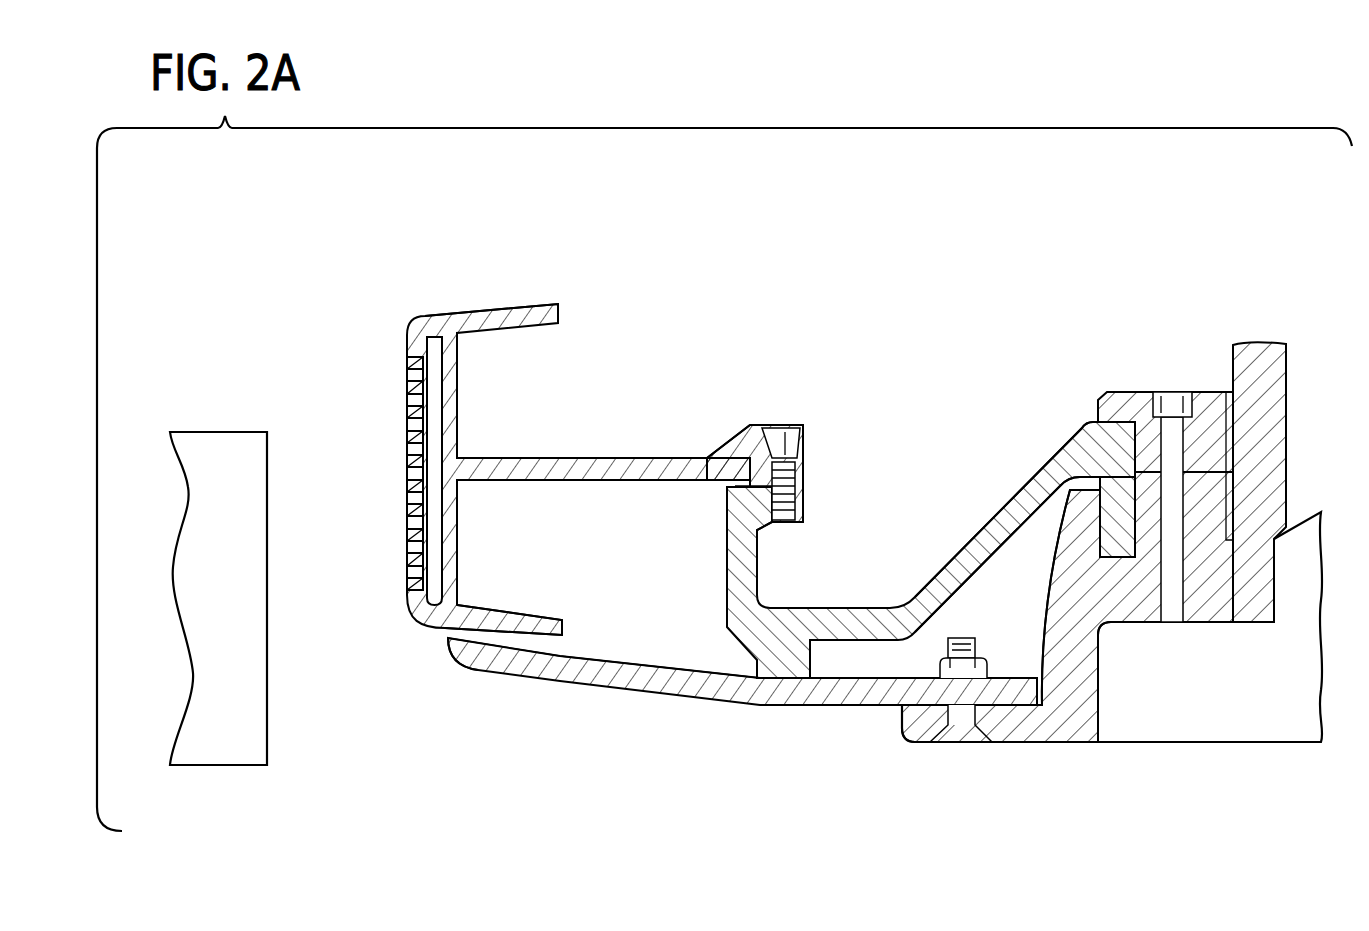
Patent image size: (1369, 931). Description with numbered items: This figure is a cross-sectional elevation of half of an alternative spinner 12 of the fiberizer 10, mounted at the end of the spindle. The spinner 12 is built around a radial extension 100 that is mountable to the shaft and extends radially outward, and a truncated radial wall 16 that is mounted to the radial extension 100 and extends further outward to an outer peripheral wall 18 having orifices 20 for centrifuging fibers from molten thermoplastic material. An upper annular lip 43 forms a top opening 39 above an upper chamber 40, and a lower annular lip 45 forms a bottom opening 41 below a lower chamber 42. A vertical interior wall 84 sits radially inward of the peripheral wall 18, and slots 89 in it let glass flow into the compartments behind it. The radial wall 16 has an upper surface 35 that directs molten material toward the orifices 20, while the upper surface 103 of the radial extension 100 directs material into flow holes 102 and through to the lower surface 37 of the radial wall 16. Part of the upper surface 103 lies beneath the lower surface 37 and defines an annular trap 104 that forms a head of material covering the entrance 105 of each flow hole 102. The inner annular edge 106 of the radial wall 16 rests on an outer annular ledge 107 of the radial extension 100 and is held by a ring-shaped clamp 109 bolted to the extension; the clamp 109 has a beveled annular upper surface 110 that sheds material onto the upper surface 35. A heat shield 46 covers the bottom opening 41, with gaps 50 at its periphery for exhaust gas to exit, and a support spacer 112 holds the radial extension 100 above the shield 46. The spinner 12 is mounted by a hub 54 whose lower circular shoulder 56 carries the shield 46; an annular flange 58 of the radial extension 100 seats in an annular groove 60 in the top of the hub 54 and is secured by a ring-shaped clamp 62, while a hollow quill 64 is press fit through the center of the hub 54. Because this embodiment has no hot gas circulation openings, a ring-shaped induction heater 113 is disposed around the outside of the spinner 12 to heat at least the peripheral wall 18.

The fiberizer 10 is at (1210, 222).
The spinner 12 is at (478, 216).
The radial wall 16 is at (612, 458).
The outer peripheral wall 18 is at (420, 316).
The orifices 20 is at (407, 392).
The upper surface 35 is at (520, 461).
The lower surface 37 is at (540, 485).
The top opening 39 is at (897, 322).
The upper chamber 40 is at (805, 364).
The bottom opening 41 is at (684, 662).
The lower chamber 42 is at (622, 590).
The upper annular lip 43 is at (525, 305).
The lower annular lip 45 is at (562, 628).
The heat shield 46 is at (608, 680).
The gaps 50 is at (452, 636).
The hub 54 is at (1105, 622).
The lower circular shoulder 56 is at (1022, 712).
The annular flange 58 is at (1115, 517).
The annular groove 60 is at (1058, 575).
The ring-shaped clamp 62 is at (1127, 397).
The hollow quill 64 is at (1255, 348).
The vertical interior wall 84 is at (450, 383).
The slots 89 is at (445, 555).
The radial extension 100 is at (1045, 480).
The flow holes 102 is at (745, 528).
The upper surface 103 is at (993, 503).
The annular trap 104 is at (822, 592).
The entrance 105 is at (762, 538).
The inner annular edge 106 is at (745, 487).
The outer annular ledge 107 is at (797, 490).
The clamp 109 is at (803, 440).
The annular upper surface 110 is at (735, 433).
The support spacer 112 is at (757, 655).
The induction heater 113 is at (245, 722).